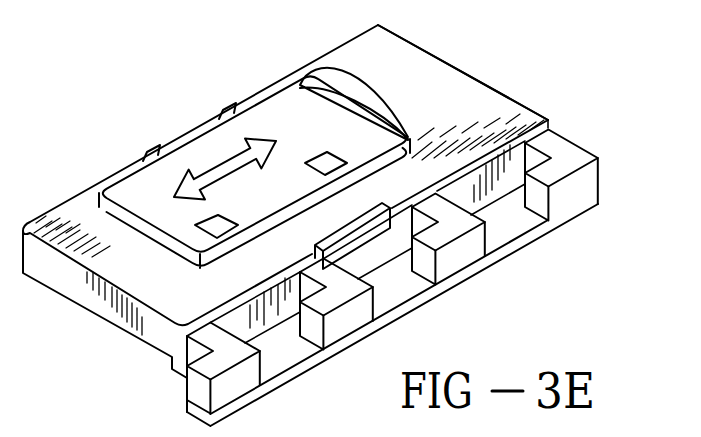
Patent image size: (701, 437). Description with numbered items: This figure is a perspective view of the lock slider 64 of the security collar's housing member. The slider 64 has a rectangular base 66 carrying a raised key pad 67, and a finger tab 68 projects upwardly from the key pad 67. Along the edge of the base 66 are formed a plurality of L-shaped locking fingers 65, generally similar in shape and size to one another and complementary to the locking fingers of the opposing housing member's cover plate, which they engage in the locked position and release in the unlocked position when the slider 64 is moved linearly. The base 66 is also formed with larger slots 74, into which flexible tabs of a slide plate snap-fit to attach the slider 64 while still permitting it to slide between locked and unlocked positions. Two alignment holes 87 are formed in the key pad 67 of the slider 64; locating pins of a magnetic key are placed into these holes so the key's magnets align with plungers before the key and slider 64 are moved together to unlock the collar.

The lock slider 64 is at (515, 97).
The locking fingers 65 is at (573, 145).
The rectangular base 66 is at (444, 92).
The raised key pad 67 is at (263, 127).
The finger tab 68 is at (364, 92).
The slots 74 is at (193, 138).
The alignment holes 87 is at (324, 173).